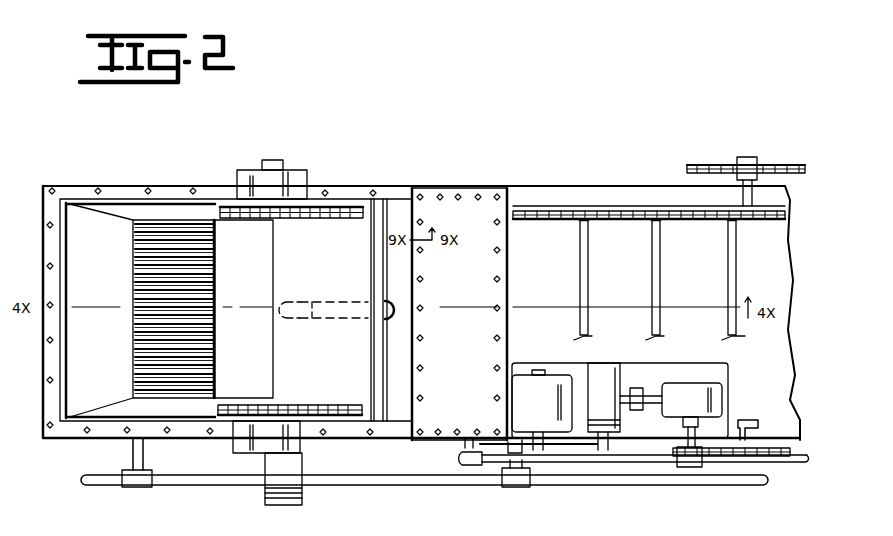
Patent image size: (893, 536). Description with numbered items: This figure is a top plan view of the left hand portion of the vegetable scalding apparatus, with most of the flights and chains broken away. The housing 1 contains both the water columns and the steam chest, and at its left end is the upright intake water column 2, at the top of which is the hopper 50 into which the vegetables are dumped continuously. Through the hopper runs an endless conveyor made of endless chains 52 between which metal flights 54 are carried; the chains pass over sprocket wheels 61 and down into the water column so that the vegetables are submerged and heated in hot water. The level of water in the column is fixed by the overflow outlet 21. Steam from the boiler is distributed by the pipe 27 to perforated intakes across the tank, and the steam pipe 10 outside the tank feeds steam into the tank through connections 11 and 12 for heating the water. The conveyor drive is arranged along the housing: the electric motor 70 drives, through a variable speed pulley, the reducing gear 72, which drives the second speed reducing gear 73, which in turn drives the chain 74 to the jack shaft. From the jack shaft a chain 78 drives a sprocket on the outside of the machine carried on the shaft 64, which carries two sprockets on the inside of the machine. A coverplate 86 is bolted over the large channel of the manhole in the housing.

The housing 1 is at (445, 186).
The upright intake water column 2 is at (65, 183).
The steam pipe 10 is at (383, 488).
The steam connection 11 is at (145, 455).
The steam connection 12 is at (520, 489).
The overflow outlet 21 is at (302, 497).
The steam distribution pipe 27 is at (653, 462).
The hopper 50 is at (135, 212).
The endless chain 52 is at (690, 222).
The metal flights 54 is at (651, 281).
The sprocket wheels 61 is at (311, 219).
The shaft 64 is at (746, 157).
The electric motor 70 is at (542, 383).
The reducing gear 72 is at (602, 372).
The second speed reducing gear 73 is at (686, 392).
The chain 74 is at (765, 447).
The chain 78 is at (780, 165).
The coverplate 86 is at (508, 266).